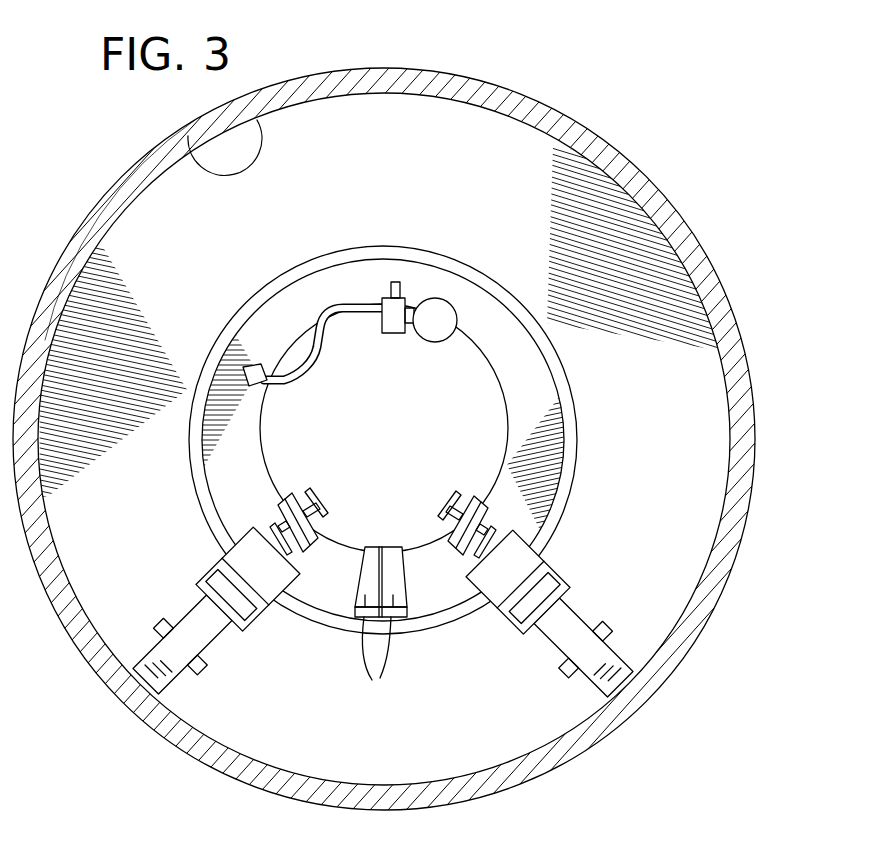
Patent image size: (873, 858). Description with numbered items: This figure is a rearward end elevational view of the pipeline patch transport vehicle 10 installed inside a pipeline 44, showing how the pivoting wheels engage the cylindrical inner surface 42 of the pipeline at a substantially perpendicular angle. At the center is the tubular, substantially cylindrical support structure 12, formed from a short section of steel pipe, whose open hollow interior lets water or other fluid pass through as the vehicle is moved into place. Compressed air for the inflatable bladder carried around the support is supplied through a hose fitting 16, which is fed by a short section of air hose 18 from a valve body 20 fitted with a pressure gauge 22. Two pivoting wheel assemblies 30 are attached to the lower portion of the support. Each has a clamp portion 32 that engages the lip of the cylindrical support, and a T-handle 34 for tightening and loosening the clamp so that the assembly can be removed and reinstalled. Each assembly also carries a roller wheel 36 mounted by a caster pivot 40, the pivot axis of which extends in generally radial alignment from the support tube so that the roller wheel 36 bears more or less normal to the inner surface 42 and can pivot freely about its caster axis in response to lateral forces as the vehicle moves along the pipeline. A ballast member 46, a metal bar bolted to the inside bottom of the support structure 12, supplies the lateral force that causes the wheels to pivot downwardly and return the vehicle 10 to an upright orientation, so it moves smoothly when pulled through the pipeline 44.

The pipeline patch transport vehicle 10 is at (215, 298).
The cylindrical support structure 12 is at (222, 345).
The hose fitting 16 is at (252, 388).
The air hose 18 is at (318, 360).
The valve body 20 is at (393, 330).
The pressure gauge 22 is at (438, 333).
The pivoting wheel assembly 30 is at (430, 528).
The clamp portion 32 is at (252, 532).
The T-handle 34 is at (275, 523).
The roller wheel 36 is at (152, 675).
The caster pivot 40 is at (215, 612).
The cylindrical inner surface 42 is at (217, 167).
The pipeline 44 is at (133, 180).
The ballast member 46 is at (371, 680).